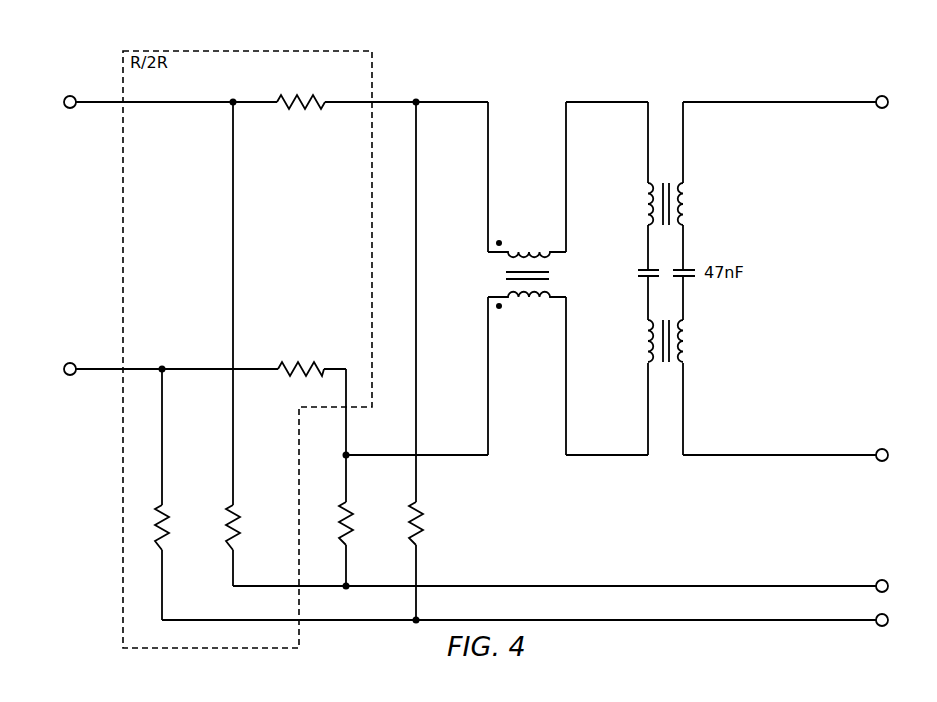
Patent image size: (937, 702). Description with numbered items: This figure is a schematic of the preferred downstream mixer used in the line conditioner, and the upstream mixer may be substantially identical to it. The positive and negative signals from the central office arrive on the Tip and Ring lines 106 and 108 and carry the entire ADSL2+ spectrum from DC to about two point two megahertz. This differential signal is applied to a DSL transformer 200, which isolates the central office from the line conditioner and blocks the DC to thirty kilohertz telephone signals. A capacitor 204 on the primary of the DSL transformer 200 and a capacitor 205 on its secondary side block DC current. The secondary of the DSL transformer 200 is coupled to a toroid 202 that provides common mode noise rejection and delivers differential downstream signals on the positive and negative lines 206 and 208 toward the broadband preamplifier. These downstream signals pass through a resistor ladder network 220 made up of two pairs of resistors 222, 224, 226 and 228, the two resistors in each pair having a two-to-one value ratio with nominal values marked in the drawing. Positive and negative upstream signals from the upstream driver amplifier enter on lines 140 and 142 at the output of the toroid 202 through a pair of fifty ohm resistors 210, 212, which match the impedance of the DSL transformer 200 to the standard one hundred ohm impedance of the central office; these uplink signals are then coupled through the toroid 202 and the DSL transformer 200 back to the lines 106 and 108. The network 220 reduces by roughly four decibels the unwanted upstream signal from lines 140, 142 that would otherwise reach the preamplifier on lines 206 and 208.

The Tip line 106 is at (833, 102).
The Ring line 108 is at (848, 455).
The positive upstream signal line 140 is at (832, 586).
The negative upstream signal line 142 is at (832, 620).
The DSL transformer 200 is at (671, 102).
The toroid 202 is at (538, 100).
The capacitor 204 is at (690, 269).
The capacitor 205 is at (648, 269).
The positive line 206 is at (96, 101).
The negative line 208 is at (96, 369).
The 50 ohm resistor 210 is at (352, 506).
The 50 ohm resistor 212 is at (422, 506).
The R/2R network 220 is at (238, 50).
The resistor 222 is at (300, 108).
The resistor 224 is at (232, 512).
The resistor 226 is at (298, 372).
The resistor 228 is at (160, 523).